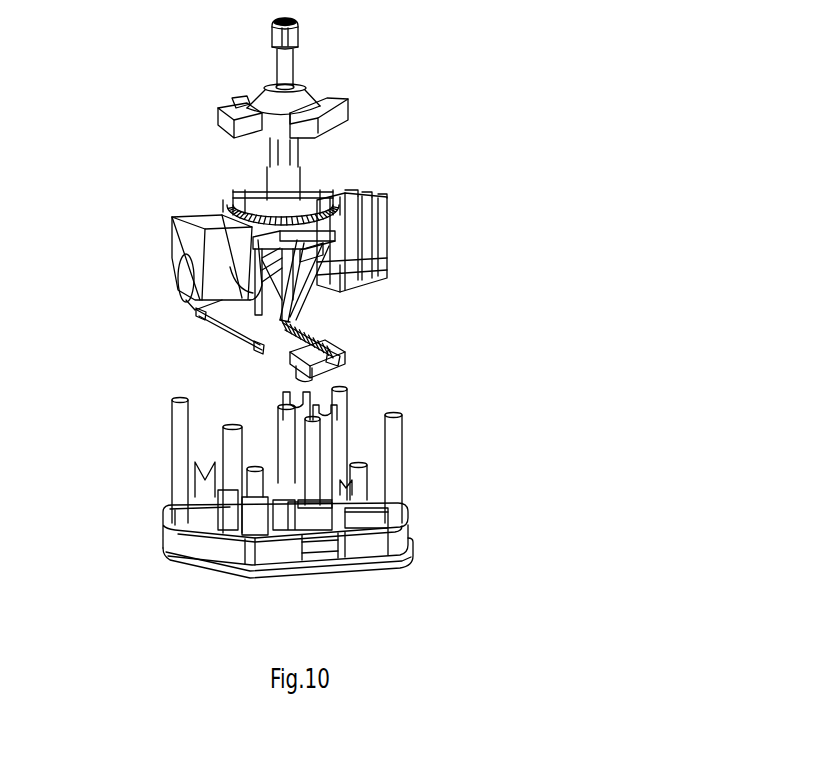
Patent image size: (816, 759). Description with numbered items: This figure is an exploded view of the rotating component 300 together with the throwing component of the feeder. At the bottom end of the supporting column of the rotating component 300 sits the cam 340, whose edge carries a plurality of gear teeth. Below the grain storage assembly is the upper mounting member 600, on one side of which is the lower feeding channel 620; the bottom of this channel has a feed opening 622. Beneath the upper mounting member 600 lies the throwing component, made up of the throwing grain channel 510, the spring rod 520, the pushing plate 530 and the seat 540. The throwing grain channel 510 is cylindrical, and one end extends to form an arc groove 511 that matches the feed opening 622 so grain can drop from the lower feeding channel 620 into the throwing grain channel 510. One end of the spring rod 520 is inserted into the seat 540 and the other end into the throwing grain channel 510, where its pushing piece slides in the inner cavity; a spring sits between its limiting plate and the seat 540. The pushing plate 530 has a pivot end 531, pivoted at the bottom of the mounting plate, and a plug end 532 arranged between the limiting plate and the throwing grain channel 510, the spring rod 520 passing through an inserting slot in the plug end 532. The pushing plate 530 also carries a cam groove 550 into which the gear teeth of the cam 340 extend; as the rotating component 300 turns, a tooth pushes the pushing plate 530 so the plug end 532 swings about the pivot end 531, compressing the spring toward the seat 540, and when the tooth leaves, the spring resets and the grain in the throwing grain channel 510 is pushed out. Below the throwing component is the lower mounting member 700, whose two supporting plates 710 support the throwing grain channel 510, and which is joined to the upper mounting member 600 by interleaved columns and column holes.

The rotating component 300 is at (316, 128).
The cam 340 is at (268, 210).
The upper mounting member 600 is at (358, 192).
The lower feeding channel 620 is at (197, 235).
The feed opening 622 is at (190, 275).
The arc groove 511 is at (195, 298).
The throwing grain channel 510 is at (220, 303).
The pivot end 531 is at (322, 244).
The cam groove 550 is at (348, 262).
The pushing plate 530 is at (333, 342).
The spring rod 520 is at (340, 370).
The seat 540 is at (342, 377).
The plug end 532 is at (262, 343).
The lower mounting member 700 is at (368, 545).
The supporting plate 710 is at (260, 527).